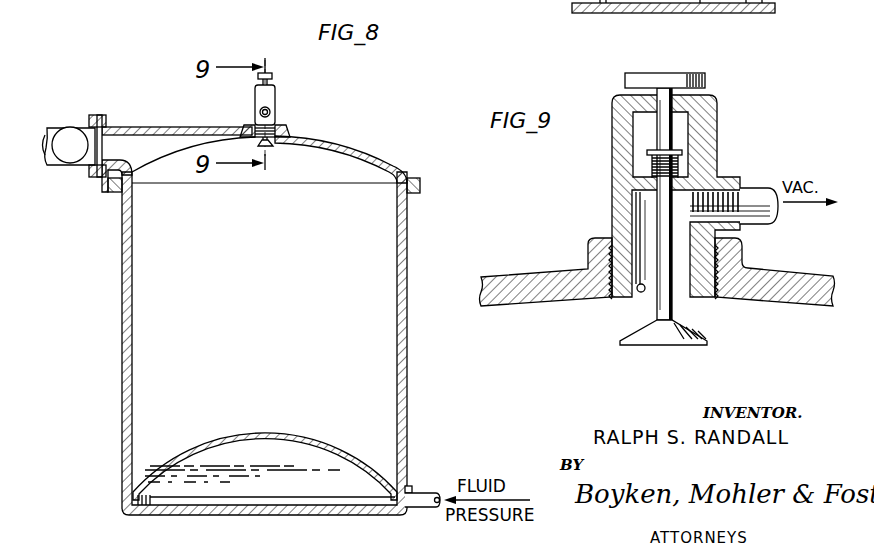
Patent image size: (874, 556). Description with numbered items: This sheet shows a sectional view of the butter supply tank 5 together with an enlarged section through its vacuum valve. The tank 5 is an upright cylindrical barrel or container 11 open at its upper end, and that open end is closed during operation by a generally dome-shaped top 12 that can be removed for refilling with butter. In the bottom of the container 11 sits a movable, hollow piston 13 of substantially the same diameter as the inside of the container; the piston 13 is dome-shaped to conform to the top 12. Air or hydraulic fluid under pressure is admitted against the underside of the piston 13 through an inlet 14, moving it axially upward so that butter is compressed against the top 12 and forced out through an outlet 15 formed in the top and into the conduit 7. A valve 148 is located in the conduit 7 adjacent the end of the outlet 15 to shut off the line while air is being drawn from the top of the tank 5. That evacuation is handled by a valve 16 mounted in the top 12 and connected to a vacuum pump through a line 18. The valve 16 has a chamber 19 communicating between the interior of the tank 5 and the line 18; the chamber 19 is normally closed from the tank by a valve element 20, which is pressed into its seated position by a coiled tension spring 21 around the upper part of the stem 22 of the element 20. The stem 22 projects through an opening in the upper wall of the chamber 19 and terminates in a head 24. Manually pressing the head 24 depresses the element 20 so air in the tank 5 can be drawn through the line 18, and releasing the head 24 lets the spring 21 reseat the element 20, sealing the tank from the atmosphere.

In FIG. 8, the supply tank 5 is at (368, 138).
In FIG. 9, the supply tank 5 is at (541, 258).
In FIG. 8, the conduit 7 is at (58, 129).
In FIG. 8, the container 11 is at (406, 315).
In FIG. 8, the dome-shaped top 12 is at (402, 168).
In FIG. 9, the dome-shaped top 12 is at (809, 282).
In FIG. 8, the piston 13 is at (264, 438).
In FIG. 8, the inlet 14 is at (426, 498).
In FIG. 8, the outlet 15 is at (126, 135).
In FIG. 8, the valve 16 is at (283, 100).
In FIG. 9, the valve 16 is at (728, 130).
In FIG. 8, the line 18 is at (259, 111).
In FIG. 9, the line 18 is at (748, 196).
In FIG. 9, the chamber 19 is at (645, 296).
In FIG. 8, the valve element 20 is at (269, 147).
In FIG. 9, the valve element 20 is at (707, 343).
In FIG. 9, the coiled tension spring 21 is at (667, 300).
In FIG. 9, the stem 22 is at (651, 160).
In FIG. 8, the head 24 is at (273, 77).
In FIG. 9, the head 24 is at (627, 78).
In FIG. 8, the valve 148 is at (72, 166).